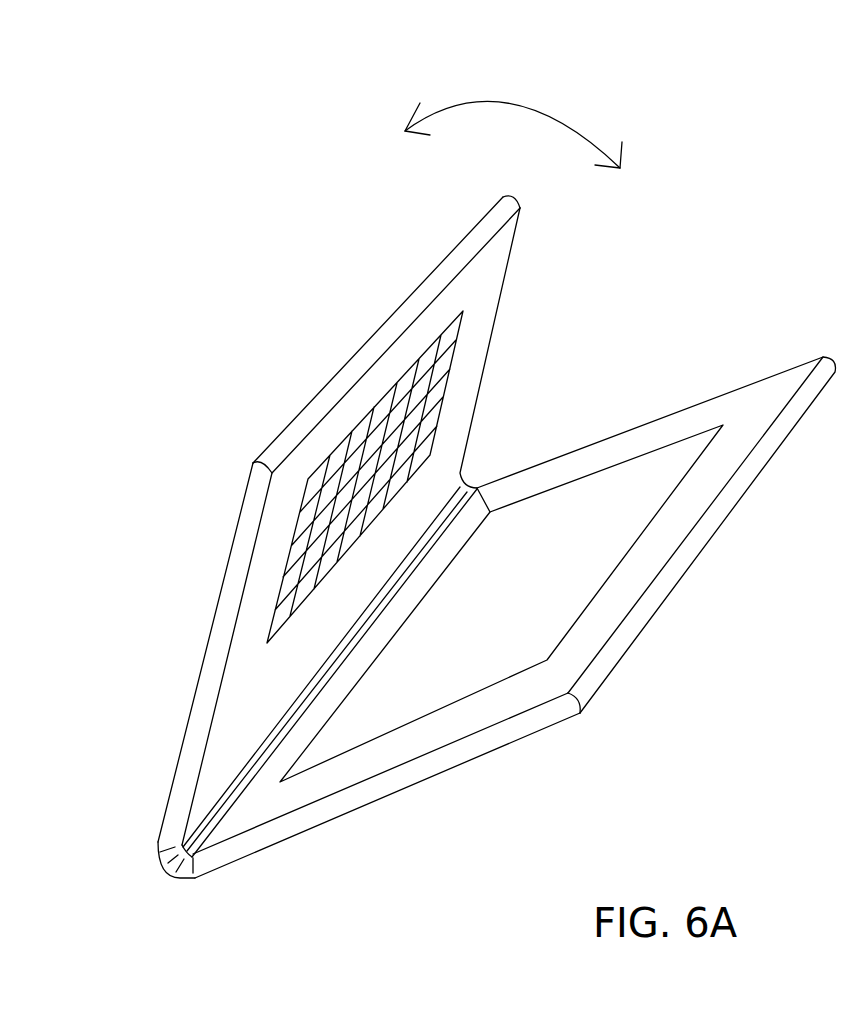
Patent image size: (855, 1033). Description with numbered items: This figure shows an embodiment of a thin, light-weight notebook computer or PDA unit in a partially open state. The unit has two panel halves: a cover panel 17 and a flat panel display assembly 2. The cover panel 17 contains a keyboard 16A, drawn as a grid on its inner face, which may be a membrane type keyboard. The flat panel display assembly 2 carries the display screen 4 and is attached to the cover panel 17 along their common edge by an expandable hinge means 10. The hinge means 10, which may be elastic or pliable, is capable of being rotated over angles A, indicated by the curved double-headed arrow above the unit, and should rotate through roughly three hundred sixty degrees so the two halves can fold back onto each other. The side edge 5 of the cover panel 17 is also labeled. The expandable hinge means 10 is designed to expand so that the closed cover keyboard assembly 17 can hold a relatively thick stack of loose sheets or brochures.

The flat panel display assembly 2 is at (652, 555).
The display screen 4 is at (607, 498).
The side edge of cover panel 5 is at (252, 615).
The expandable hinge means 10 is at (165, 870).
The keyboard 16A is at (445, 338).
The cover panel 17 is at (357, 352).
The angles A is at (513, 118).